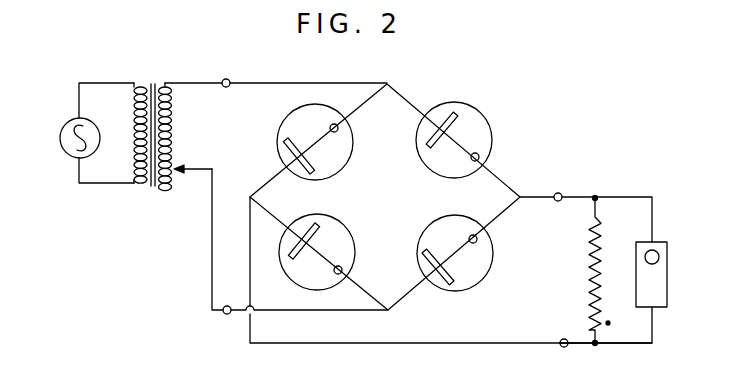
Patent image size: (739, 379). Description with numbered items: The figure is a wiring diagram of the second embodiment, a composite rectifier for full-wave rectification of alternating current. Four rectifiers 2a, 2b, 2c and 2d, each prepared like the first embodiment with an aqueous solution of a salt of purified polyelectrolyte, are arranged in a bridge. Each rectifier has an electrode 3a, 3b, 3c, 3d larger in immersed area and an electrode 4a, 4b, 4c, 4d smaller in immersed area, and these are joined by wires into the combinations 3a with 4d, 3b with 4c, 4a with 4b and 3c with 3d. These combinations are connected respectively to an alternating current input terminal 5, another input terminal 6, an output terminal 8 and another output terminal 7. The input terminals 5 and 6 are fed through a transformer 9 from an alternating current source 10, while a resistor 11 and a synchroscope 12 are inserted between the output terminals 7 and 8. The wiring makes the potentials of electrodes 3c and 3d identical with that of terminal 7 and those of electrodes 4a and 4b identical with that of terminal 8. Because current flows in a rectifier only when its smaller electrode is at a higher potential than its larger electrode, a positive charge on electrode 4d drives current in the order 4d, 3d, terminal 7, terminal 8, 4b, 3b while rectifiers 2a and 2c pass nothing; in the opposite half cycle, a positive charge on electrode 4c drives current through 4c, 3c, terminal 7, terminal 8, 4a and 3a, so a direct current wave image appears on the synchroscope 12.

The rectifier 2a is at (352, 158).
The rectifier 2b is at (338, 228).
The rectifier 2c is at (490, 266).
The rectifier 2d is at (472, 132).
The electrode larger in immersed area 3a is at (338, 128).
The electrode larger in immersed area 3b is at (342, 270).
The electrode larger in immersed area 3c is at (472, 235).
The electrode larger in immersed area 3d is at (479, 157).
The electrode smaller in immersed area 4a is at (284, 148).
The electrode smaller in immersed area 4b is at (309, 222).
The electrode smaller in immersed area 4c is at (426, 244).
The electrode smaller in immersed area 4d is at (447, 118).
The alternating current input terminal 5 is at (226, 79).
The input terminal 6 is at (227, 314).
The output terminal 7 is at (558, 193).
The output terminal 8 is at (564, 339).
The transformer 9 is at (153, 84).
The alternating current source 10 is at (66, 124).
The resistor 11 is at (603, 236).
The synchroscope 12 is at (660, 242).